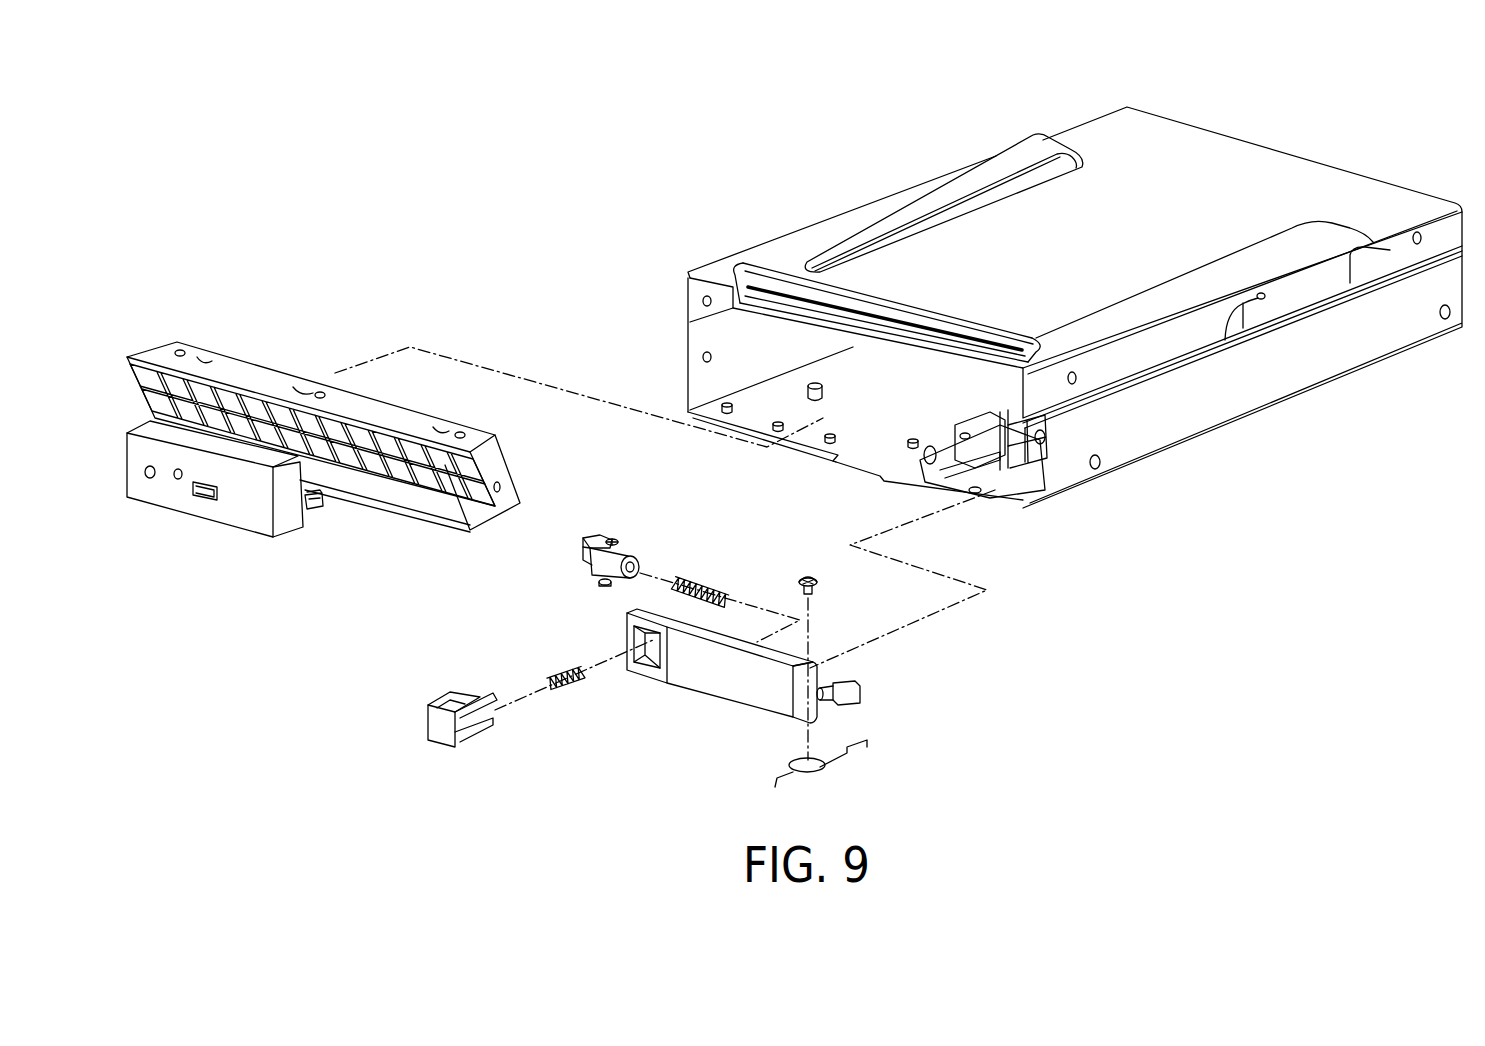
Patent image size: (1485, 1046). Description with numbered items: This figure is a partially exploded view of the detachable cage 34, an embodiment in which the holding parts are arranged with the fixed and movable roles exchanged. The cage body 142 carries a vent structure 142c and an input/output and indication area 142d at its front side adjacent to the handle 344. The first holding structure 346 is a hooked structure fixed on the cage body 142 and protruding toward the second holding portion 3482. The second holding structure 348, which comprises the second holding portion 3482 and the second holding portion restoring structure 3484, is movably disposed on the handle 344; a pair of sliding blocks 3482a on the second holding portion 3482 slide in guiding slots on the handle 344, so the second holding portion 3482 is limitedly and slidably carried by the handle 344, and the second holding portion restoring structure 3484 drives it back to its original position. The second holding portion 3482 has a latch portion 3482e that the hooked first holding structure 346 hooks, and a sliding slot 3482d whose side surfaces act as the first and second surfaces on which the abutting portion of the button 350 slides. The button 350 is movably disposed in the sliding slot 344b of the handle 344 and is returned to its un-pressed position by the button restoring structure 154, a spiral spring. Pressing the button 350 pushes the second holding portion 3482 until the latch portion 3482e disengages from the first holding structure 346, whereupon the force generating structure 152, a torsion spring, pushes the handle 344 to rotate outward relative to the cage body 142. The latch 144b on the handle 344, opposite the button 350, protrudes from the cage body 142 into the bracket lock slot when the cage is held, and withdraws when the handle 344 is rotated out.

The detachable cage 34 is at (1470, 65).
The cage body 142 is at (982, 222).
The vent structure 142c is at (245, 395).
The input/output and indication area 142d is at (200, 505).
The first holding structure 346 is at (316, 512).
The second holding structure 348 is at (793, 510).
The second holding portion 3482 is at (618, 551).
The sliding blocks 3482a is at (612, 540).
The sliding slot 3482d is at (587, 540).
The latch portion 3482e is at (585, 547).
The second holding portion restoring structure 3484 is at (715, 580).
The handle 344 is at (723, 690).
The sliding slot 344b is at (652, 663).
The latch 144b is at (860, 694).
The force generating structure 152 is at (817, 777).
The button 350 is at (433, 727).
The button restoring structure 154 is at (572, 690).